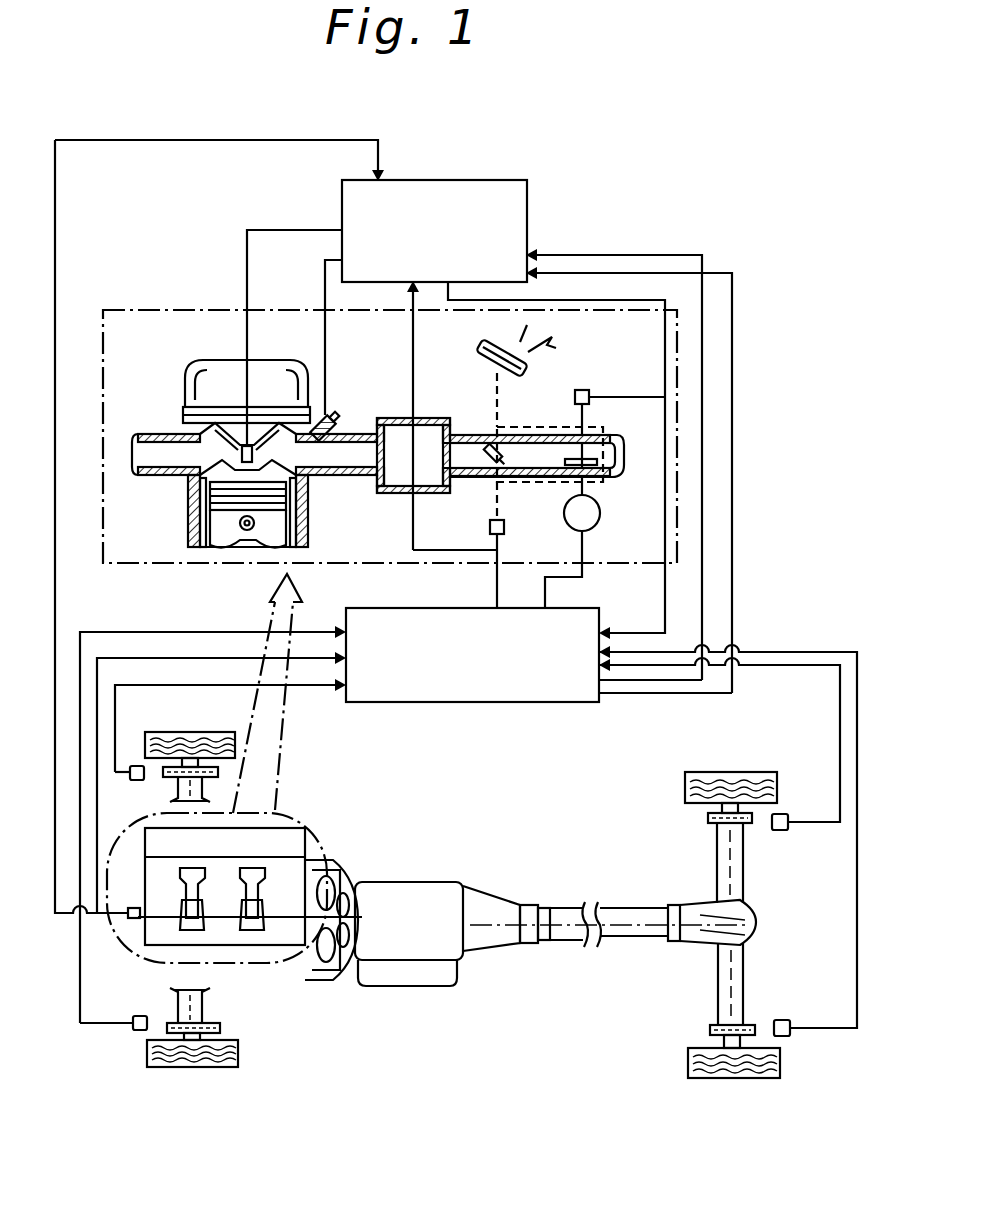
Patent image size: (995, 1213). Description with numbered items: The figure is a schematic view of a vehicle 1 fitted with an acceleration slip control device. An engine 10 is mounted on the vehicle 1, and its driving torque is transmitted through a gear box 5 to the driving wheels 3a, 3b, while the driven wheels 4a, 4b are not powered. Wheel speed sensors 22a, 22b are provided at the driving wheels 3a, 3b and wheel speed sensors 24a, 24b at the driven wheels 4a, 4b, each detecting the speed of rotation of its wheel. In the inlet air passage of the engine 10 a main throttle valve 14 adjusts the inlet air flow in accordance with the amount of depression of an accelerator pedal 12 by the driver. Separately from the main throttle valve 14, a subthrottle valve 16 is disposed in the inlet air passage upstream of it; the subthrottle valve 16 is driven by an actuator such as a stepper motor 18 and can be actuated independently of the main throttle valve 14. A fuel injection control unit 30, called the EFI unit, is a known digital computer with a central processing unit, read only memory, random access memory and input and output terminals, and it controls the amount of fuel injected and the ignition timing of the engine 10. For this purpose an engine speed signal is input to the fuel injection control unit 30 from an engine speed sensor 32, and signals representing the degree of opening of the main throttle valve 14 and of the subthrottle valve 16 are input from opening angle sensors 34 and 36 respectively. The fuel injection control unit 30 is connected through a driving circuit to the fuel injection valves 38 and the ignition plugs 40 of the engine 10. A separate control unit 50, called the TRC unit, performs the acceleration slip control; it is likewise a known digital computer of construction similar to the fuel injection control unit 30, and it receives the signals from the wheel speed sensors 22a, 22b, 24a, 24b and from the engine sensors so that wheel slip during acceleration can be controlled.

The vehicle 1 is at (453, 1043).
The driving wheel 3a is at (768, 772).
The driving wheel 3b is at (762, 1080).
The driven wheel 4a is at (192, 732).
The driven wheel 4b is at (190, 1068).
The gear box 5 is at (410, 882).
The engine 10 is at (157, 308).
The accelerator pedal 12 is at (484, 352).
The main throttle valve 14 is at (499, 445).
The subthrottle valve 16 is at (603, 444).
The stepper motor 18 is at (598, 524).
The wheel speed sensor 22a is at (783, 831).
The wheel speed sensor 22b is at (784, 1020).
The wheel speed sensor 24a is at (130, 778).
The wheel speed sensor 24b is at (135, 1016).
The fuel injection control unit 30 is at (440, 180).
The engine speed sensor 32 is at (128, 920).
The opening angle sensor 34 is at (504, 527).
The opening angle sensor 36 is at (586, 390).
The fuel injection valve 38 is at (335, 418).
The ignition plug 40 is at (265, 395).
The control unit 50 is at (599, 612).